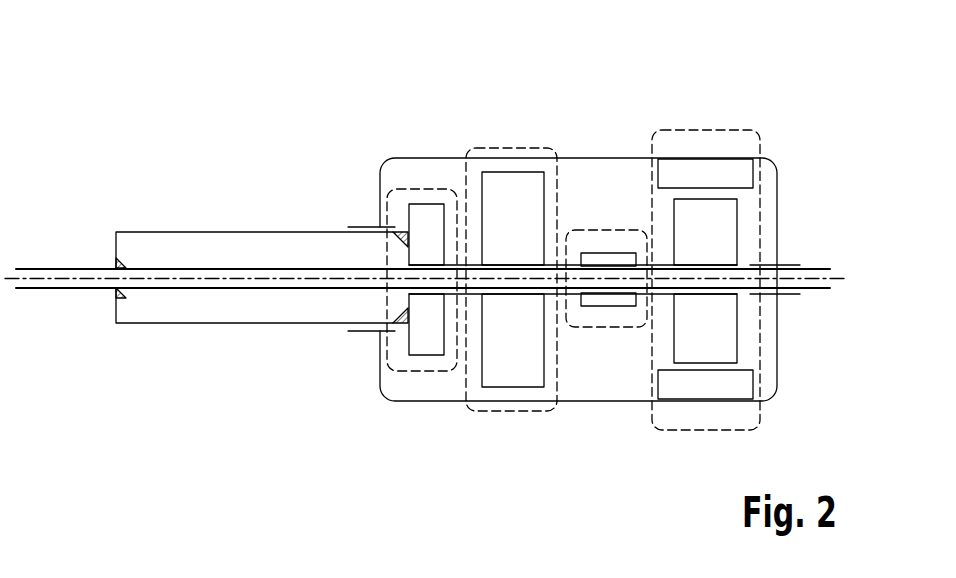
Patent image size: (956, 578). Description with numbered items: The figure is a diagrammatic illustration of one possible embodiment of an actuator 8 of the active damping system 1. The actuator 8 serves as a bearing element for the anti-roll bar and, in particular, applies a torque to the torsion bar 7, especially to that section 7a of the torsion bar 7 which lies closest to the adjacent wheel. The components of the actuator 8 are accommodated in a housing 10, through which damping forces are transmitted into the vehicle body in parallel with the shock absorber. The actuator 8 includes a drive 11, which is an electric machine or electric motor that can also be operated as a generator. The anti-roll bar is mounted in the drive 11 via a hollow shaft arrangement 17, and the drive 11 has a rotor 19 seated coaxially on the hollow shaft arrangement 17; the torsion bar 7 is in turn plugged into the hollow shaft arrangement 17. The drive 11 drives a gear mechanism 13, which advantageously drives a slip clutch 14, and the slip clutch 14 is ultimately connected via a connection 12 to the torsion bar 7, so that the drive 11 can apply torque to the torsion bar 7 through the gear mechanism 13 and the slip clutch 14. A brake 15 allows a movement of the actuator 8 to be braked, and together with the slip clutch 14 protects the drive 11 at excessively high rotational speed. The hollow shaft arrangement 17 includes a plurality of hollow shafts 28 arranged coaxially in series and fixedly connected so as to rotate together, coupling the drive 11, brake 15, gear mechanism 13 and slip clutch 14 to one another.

The active damping system 1 is at (168, 76).
The torsion bar 7 is at (62, 289).
The section of the torsion bar 7a is at (66, 334).
The actuator 8 is at (303, 135).
The housing 10 is at (778, 184).
The drive 11 is at (700, 130).
The connection 12 is at (118, 262).
The gear mechanism 13 is at (509, 148).
The slip clutch 14 is at (409, 189).
The brake 15 is at (576, 230).
The hollow shaft arrangement 17 is at (661, 312).
The rotor 19 is at (712, 330).
The hollow shafts 28 is at (663, 263).